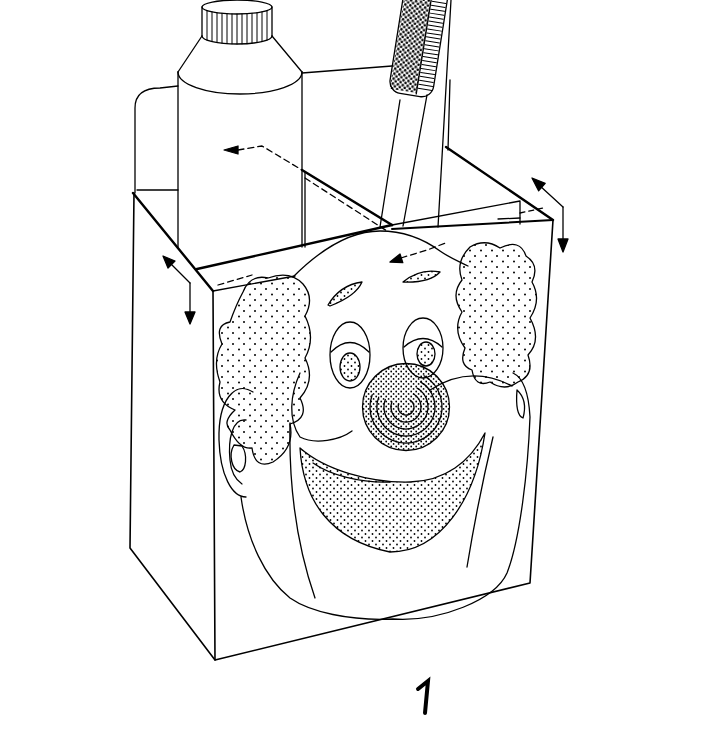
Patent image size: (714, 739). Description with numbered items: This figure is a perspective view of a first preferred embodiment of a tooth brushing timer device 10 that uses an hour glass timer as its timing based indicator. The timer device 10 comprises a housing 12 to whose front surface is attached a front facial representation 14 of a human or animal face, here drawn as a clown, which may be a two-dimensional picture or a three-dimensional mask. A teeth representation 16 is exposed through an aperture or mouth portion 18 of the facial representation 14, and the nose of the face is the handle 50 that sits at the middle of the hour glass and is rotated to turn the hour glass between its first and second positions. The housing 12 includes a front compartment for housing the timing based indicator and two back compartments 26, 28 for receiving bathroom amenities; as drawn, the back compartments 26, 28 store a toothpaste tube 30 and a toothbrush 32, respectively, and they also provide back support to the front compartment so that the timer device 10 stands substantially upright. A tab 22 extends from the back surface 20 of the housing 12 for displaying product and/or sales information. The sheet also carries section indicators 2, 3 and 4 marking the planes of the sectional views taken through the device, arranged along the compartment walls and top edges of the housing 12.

The timer device 10 is at (528, 41).
The housing 12 is at (153, 312).
The front facial representation 14 is at (538, 466).
The teeth representation 16 is at (440, 490).
The mouth portion 18 is at (411, 541).
The back surface 20 is at (133, 226).
The tab 22 is at (137, 123).
The back compartment 26 is at (155, 203).
The back compartment 28 is at (462, 152).
The toothpaste tube 30 is at (285, 103).
The toothbrush 32 is at (406, 122).
The handle 50 is at (449, 406).
The section line 2- 2 is at (356, 220).
The section line 3- 3 is at (327, 208).
The section line 4- 4 is at (376, 281).